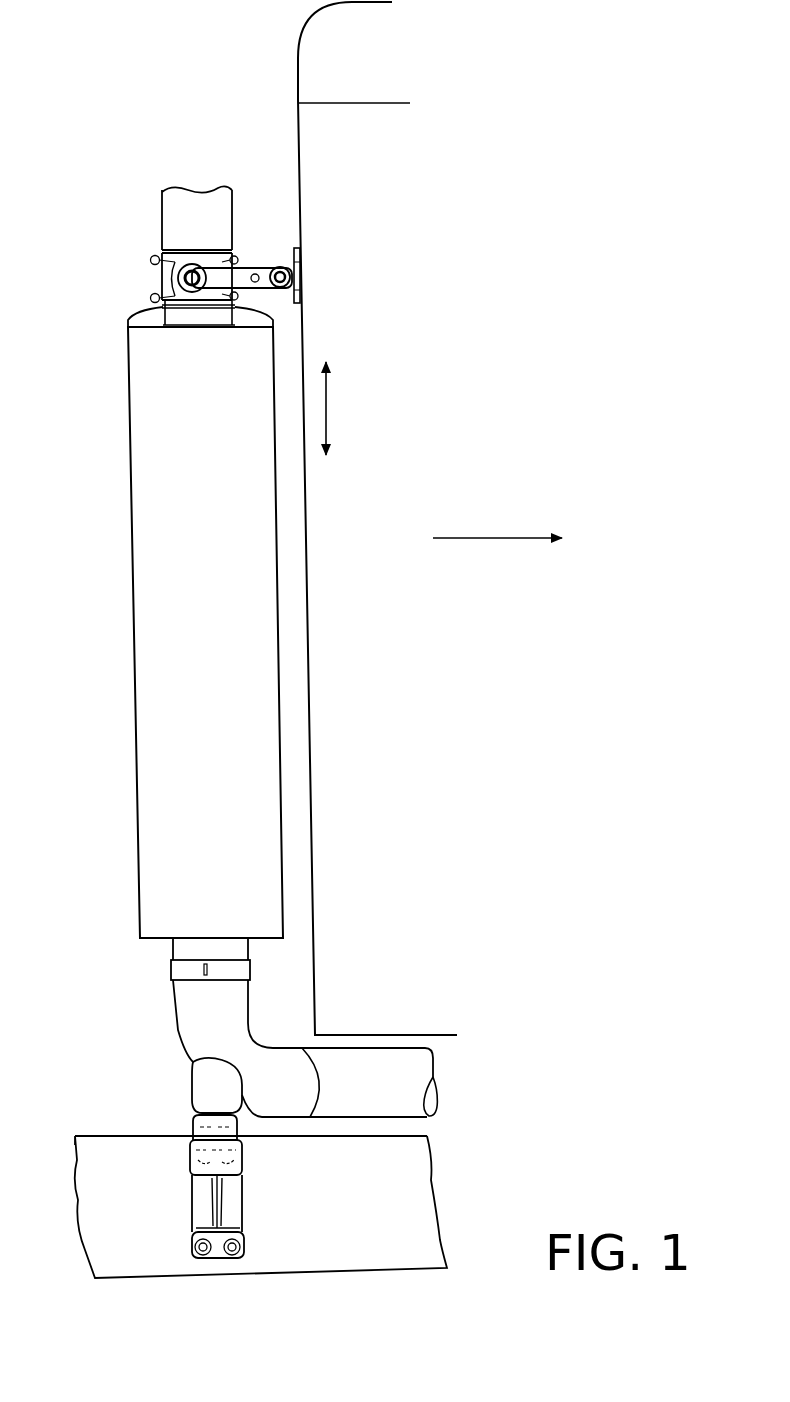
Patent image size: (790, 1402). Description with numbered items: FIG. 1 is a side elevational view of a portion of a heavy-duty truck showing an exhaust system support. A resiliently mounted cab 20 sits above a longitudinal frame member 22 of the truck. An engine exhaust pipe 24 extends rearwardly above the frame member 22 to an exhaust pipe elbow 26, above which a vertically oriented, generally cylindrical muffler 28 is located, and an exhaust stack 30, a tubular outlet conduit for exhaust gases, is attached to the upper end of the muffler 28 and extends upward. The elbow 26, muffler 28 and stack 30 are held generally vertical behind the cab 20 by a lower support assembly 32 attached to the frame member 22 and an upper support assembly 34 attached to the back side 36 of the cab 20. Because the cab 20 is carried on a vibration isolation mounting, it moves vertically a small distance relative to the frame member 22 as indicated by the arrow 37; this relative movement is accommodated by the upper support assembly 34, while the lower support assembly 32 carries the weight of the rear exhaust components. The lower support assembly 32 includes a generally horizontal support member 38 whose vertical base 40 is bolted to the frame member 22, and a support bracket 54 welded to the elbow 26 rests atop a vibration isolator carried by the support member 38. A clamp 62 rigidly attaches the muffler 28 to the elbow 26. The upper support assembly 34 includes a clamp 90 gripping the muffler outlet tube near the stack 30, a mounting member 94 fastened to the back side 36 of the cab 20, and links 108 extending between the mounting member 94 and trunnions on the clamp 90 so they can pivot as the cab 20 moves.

The cab 20 is at (315, 48).
The longitudinal frame member 22 is at (370, 1258).
The engine exhaust pipe 24 is at (377, 1107).
The exhaust pipe elbow 26 is at (190, 1020).
The muffler 28 is at (146, 765).
The exhaust stack 30 is at (177, 213).
The lower support assembly 32 is at (136, 1126).
The upper support assembly 34 is at (260, 240).
The back side of the cab 36 is at (298, 128).
The arrow 37 is at (327, 413).
The support member 38 is at (246, 1203).
The base 40 is at (206, 1202).
The support bracket 54 is at (200, 1092).
The clamp 62 is at (171, 970).
The clamp 90 is at (165, 268).
The mounting member 94 is at (297, 268).
The links 108 is at (240, 283).